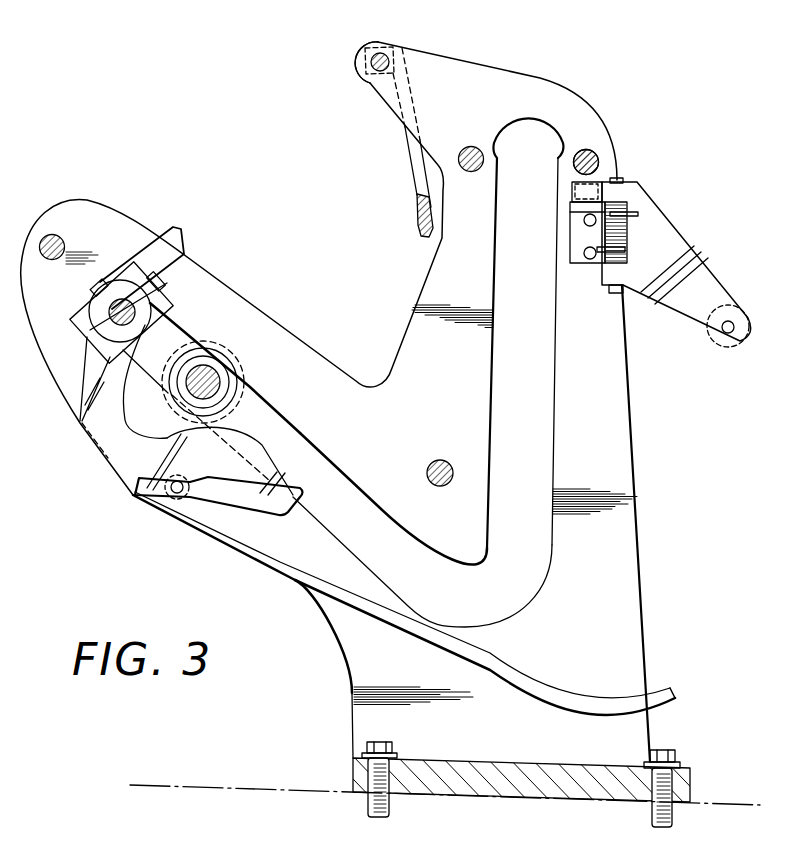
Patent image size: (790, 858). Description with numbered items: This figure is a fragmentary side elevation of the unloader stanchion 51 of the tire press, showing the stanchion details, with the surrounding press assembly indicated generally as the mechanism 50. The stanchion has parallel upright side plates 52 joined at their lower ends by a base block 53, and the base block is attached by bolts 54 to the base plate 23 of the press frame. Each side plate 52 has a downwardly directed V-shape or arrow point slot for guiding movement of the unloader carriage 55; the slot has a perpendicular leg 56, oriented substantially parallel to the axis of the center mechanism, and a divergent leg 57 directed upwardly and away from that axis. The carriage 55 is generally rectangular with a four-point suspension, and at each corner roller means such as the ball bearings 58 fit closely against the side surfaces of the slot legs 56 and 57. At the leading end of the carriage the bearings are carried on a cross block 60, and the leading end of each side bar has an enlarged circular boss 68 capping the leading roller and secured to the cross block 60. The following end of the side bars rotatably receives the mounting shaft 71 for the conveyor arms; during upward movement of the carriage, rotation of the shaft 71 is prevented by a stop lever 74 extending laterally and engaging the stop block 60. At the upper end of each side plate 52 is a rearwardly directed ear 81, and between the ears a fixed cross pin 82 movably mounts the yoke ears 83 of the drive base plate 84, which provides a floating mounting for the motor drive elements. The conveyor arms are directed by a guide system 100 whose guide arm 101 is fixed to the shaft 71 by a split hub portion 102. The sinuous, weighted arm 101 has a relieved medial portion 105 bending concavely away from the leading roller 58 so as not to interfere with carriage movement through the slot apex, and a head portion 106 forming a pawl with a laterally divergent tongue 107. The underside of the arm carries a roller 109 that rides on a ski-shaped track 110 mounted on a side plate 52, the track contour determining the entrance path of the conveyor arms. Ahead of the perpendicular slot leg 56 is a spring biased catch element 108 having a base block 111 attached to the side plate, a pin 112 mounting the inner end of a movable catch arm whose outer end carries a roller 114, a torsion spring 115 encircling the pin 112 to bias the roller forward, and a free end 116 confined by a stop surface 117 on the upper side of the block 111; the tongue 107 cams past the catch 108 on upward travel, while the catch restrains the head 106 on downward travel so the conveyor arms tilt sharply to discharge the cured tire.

The base plate 23 is at (273, 788).
The brake mechanism 50 is at (182, 157).
The unloader stanchion 51 is at (522, 80).
The stanchion side plate 52 is at (645, 636).
The base block 53 is at (503, 790).
The bolts 54 is at (387, 740).
The unloader carriage 55 is at (194, 328).
The perpendicular leg 56 is at (550, 342).
The divergent leg 57 is at (336, 464).
The ball bearings 58 is at (229, 390).
The cross block 60 is at (214, 377).
The circular boss 68 is at (228, 413).
The mounting shaft 71 is at (96, 302).
The stop lever 74 is at (150, 247).
The ear 81 is at (378, 42).
The cross pin 82 is at (371, 61).
The yoke ears 83 is at (370, 88).
The drive base plate 84 is at (420, 210).
The guide system 100 is at (118, 522).
The guide arm 101 is at (83, 423).
The hub portion 102 is at (160, 298).
The relieved medial portion 105 is at (133, 428).
The head portion 106 is at (254, 453).
The tongue 107 is at (301, 491).
The catch element 108 is at (657, 223).
The roller 109 is at (198, 490).
The track 110 is at (545, 686).
The base block 111 is at (573, 240).
The pin 112 is at (622, 290).
The roller 114 is at (717, 332).
The torsion spring 115 is at (622, 244).
The free end 116 is at (580, 190).
The stop surface 117 is at (574, 170).